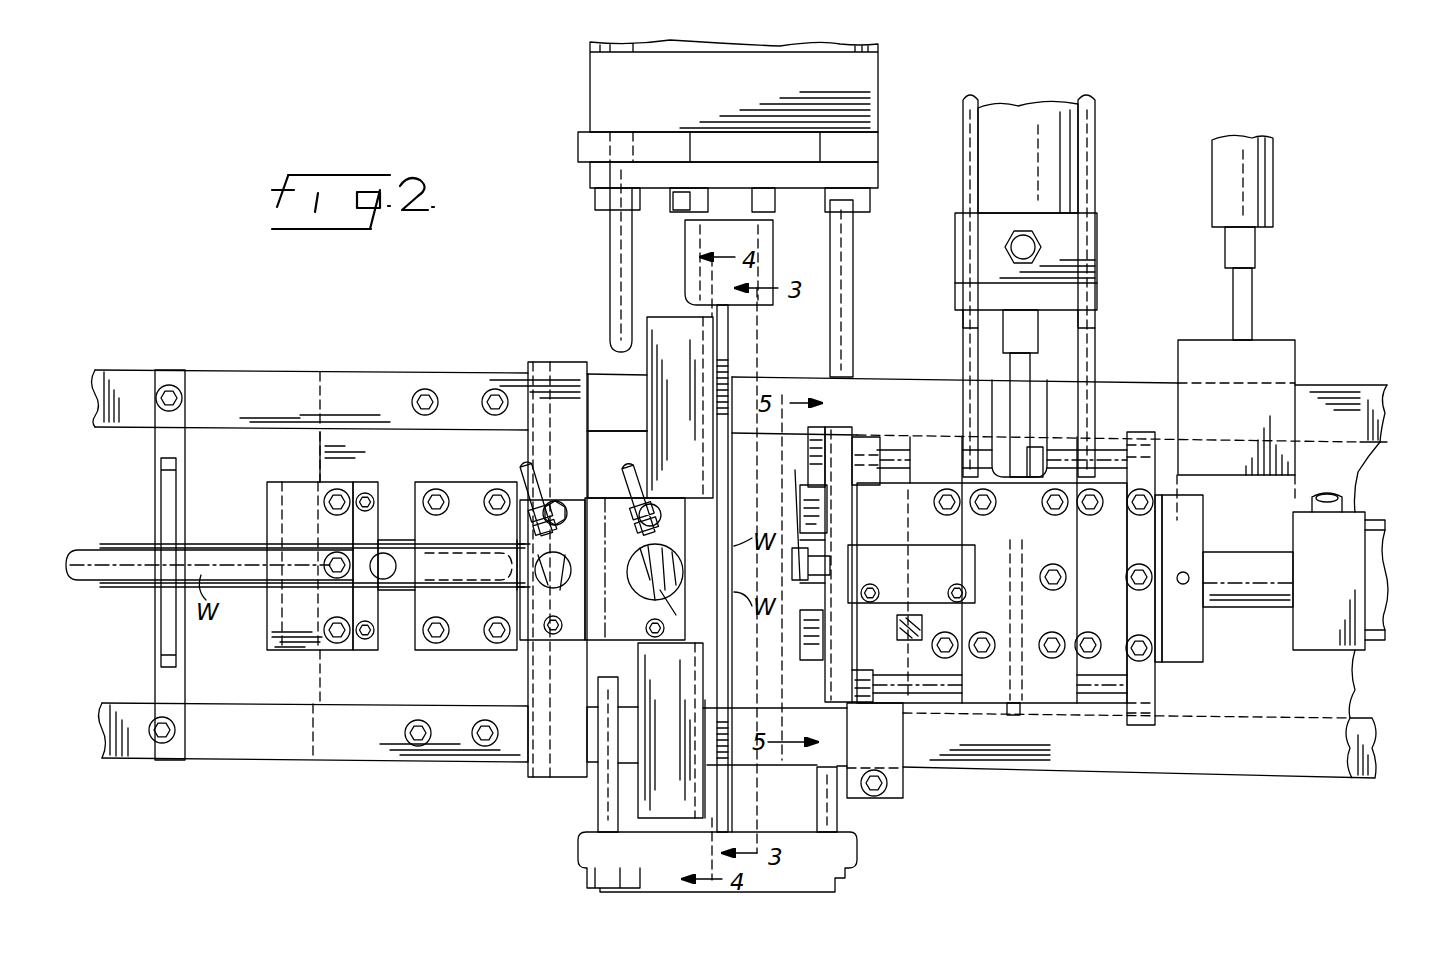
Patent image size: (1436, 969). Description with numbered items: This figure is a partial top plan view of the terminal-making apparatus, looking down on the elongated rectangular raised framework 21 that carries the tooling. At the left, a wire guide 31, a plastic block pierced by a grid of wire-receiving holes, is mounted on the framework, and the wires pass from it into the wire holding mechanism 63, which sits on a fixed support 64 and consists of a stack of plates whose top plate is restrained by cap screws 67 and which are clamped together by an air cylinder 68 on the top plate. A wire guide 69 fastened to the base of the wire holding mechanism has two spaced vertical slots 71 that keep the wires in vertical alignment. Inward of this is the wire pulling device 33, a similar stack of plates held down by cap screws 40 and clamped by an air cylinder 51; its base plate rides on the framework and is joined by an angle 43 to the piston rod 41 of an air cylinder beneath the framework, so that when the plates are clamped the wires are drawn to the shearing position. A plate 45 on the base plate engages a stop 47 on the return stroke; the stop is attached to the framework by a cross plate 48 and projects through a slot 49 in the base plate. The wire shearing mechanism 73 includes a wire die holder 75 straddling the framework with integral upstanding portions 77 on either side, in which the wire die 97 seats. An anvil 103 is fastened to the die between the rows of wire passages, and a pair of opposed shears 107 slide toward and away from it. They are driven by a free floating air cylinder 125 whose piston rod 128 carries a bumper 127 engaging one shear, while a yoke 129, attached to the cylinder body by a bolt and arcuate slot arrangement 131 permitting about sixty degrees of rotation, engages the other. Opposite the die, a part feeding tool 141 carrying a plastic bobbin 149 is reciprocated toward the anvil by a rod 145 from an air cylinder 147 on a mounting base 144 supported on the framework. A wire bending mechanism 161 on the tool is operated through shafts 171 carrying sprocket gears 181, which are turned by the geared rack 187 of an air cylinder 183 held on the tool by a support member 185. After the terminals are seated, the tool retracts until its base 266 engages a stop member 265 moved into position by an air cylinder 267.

The framework 21 is at (280, 760).
The wire guide 31 is at (162, 500).
The wire pulling device 33 is at (657, 630).
The cap screws 40 is at (660, 500).
The piston rod 41 is at (82, 588).
The angle 43 is at (295, 648).
The plate 45 is at (448, 482).
The stop 47 is at (384, 574).
The cross plate 48 is at (320, 458).
The slot 49 is at (462, 550).
The air cylinder 51 is at (648, 600).
The wire holding mechanism 63 is at (522, 655).
The fixed support 64 is at (542, 362).
The cap screws 67 is at (560, 500).
The air cylinder 68 is at (544, 585).
The wire guide 69 is at (527, 474).
The vertical slots 71 is at (522, 546).
The wire shearing mechanism 73 is at (735, 672).
The wire die holder 75 is at (645, 398).
The upstanding portions 77 is at (658, 320).
The wire die 97 is at (742, 500).
The anvil 103 is at (726, 572).
The shears 107 is at (735, 312).
The free floating air cylinder 125 is at (598, 90).
The bumper 127 is at (774, 258).
The piston rod 128 is at (770, 198).
The yoke 129 is at (606, 260).
The bolt and arcuate slot arrangement 131 is at (688, 212).
The part feeding tool 141 is at (1000, 733).
The mounting base 144 is at (1240, 780).
The rod 145 is at (1275, 605).
The air cylinder 147 is at (1305, 652).
The plastic bobbin 149 is at (800, 538).
The wire bending mechanism 161 is at (848, 427).
The shafts 171 is at (945, 425).
The sprocket gears 181 is at (1040, 440).
The air cylinder 183 is at (1065, 168).
The support member 185 is at (1075, 360).
The geared rack 187 is at (1030, 575).
The stop member 265 is at (1298, 378).
The base 266 is at (1195, 662).
The air cylinder 267 is at (1258, 190).